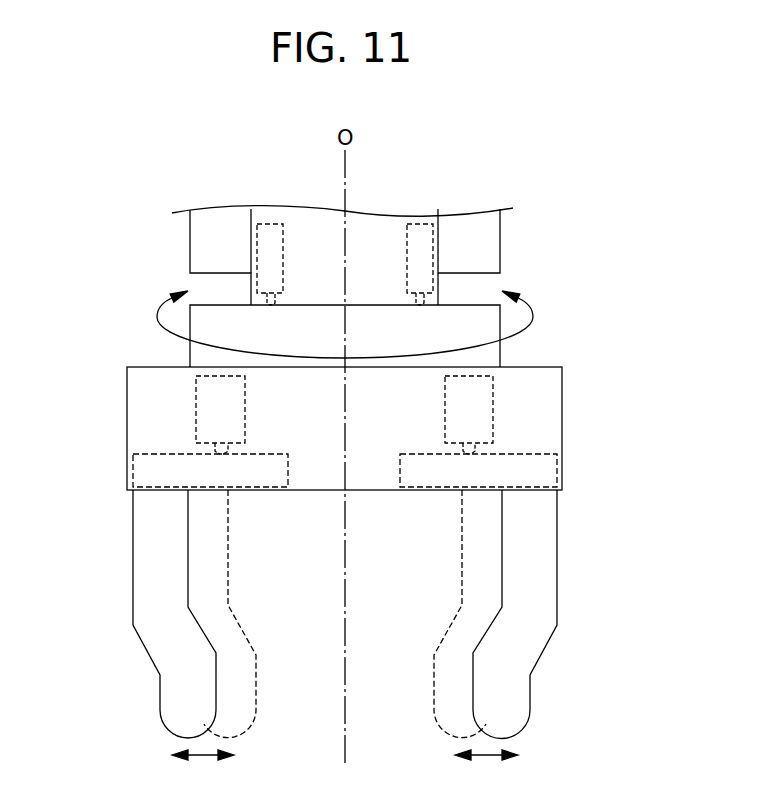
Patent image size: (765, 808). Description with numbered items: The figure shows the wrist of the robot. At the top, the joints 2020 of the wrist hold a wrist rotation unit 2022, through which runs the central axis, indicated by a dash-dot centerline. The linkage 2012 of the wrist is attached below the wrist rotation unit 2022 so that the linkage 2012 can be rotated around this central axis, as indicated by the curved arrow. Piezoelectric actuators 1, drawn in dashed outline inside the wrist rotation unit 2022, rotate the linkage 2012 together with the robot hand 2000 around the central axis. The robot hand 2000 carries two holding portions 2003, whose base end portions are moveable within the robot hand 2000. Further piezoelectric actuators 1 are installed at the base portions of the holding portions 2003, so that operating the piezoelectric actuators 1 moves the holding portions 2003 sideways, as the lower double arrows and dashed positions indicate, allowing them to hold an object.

The piezoelectric actuator 1 is at (272, 222).
The robot hand 2000 is at (562, 423).
The holding portion 2003 is at (146, 567).
The linkage 2012 is at (492, 350).
The joint 2020 is at (198, 246).
The wrist rotation unit 2022 is at (362, 228).